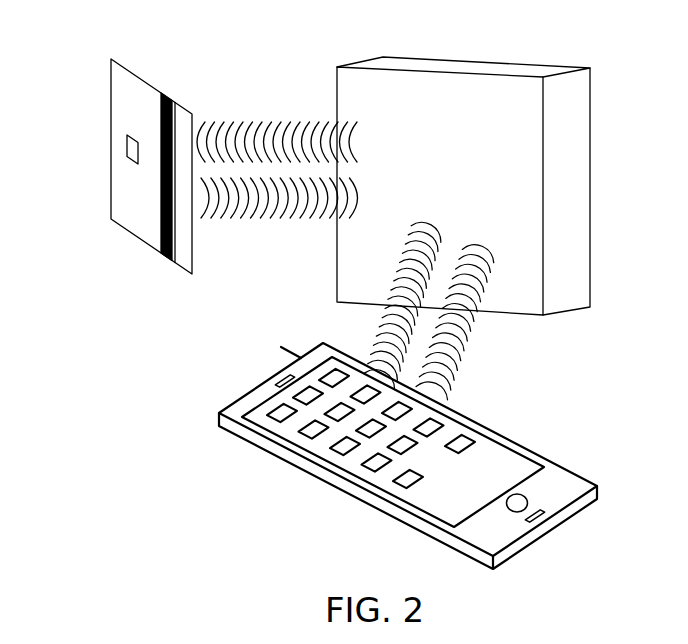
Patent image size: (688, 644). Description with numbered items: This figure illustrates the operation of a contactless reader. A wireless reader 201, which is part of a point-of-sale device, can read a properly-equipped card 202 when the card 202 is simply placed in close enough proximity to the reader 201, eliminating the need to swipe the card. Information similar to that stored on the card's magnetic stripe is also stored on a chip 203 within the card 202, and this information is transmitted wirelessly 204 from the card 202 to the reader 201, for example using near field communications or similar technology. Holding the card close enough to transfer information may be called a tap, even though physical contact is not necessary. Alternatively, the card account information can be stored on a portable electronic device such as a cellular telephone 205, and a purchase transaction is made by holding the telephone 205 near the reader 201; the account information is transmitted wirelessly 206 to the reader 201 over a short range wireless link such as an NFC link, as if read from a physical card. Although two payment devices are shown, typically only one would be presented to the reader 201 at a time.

The wireless reader 201 is at (355, 53).
The card 202 is at (122, 90).
The chip 203 is at (127, 141).
The wireless transmission 204 is at (300, 222).
The cellular telephone 205 is at (505, 446).
The wireless transmission 206 is at (467, 343).